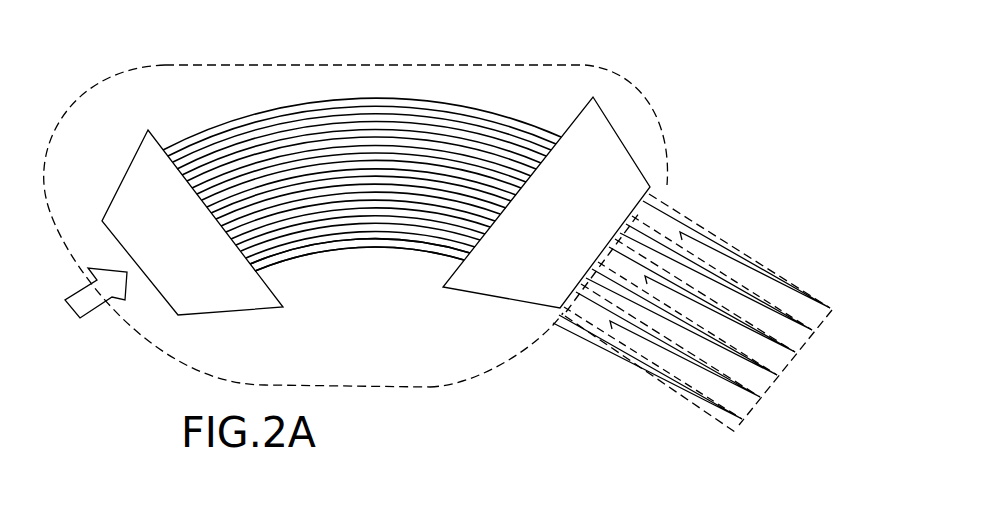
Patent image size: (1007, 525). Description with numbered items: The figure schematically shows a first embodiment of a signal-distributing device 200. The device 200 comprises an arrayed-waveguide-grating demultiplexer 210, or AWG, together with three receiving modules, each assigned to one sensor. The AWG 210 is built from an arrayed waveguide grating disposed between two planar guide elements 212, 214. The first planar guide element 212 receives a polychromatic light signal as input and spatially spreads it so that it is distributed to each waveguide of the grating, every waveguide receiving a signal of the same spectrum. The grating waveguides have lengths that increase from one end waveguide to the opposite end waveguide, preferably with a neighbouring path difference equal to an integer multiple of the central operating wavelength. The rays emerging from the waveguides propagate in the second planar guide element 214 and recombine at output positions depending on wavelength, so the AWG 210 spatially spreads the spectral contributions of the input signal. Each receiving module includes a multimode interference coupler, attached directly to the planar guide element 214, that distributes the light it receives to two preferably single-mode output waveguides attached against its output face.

The signal-distributing device 200 is at (805, 153).
The arrayed-waveguide-grating demultiplexer 210 is at (632, 80).
The planar guide element 212 is at (138, 197).
The second planar guide element 214 is at (587, 123).